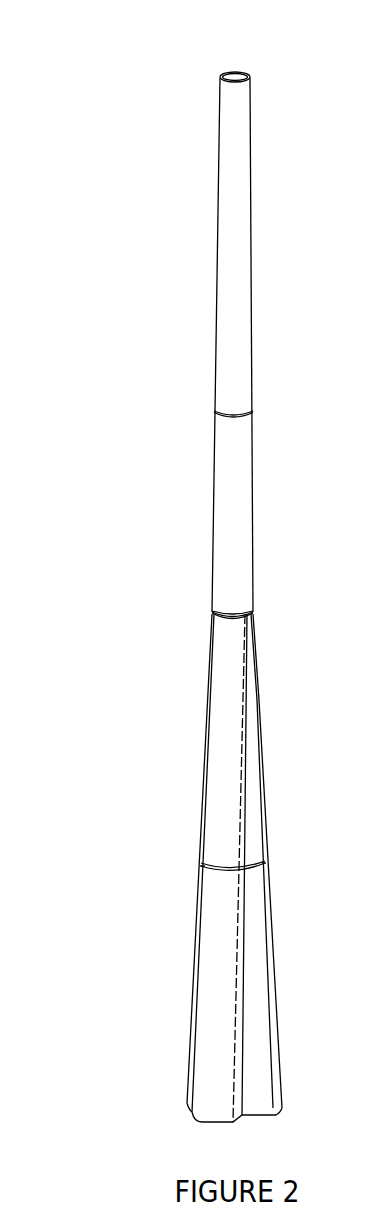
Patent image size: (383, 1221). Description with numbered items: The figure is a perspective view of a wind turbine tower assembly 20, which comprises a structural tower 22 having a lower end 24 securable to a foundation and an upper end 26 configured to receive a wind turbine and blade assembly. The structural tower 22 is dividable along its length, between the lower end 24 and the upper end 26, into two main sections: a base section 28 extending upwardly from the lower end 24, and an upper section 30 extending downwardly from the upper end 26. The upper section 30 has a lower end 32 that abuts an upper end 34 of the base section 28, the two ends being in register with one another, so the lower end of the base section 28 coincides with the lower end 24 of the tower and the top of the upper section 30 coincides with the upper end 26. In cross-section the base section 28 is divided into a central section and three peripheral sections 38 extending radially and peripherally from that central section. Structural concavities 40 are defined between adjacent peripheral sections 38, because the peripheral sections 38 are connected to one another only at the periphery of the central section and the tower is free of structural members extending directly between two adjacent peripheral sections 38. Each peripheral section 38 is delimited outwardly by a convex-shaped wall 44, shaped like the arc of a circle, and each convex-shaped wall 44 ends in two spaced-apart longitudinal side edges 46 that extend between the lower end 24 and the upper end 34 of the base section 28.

The wind turbine tower assembly 20 is at (130, 297).
The structural tower 22 is at (210, 595).
The lower end 24 is at (216, 897).
The upper end 26 is at (250, 72).
The base section 28 is at (270, 883).
The upper section 30 is at (274, 319).
The lower end of the upper section 32 is at (253, 612).
The upper end of the base section 34 is at (253, 613).
The peripheral sections 38 is at (192, 1010).
The structural concavities 40 is at (176, 1112).
The convex-shaped wall 44 is at (220, 759).
The longitudinal side edges 46 is at (202, 930).